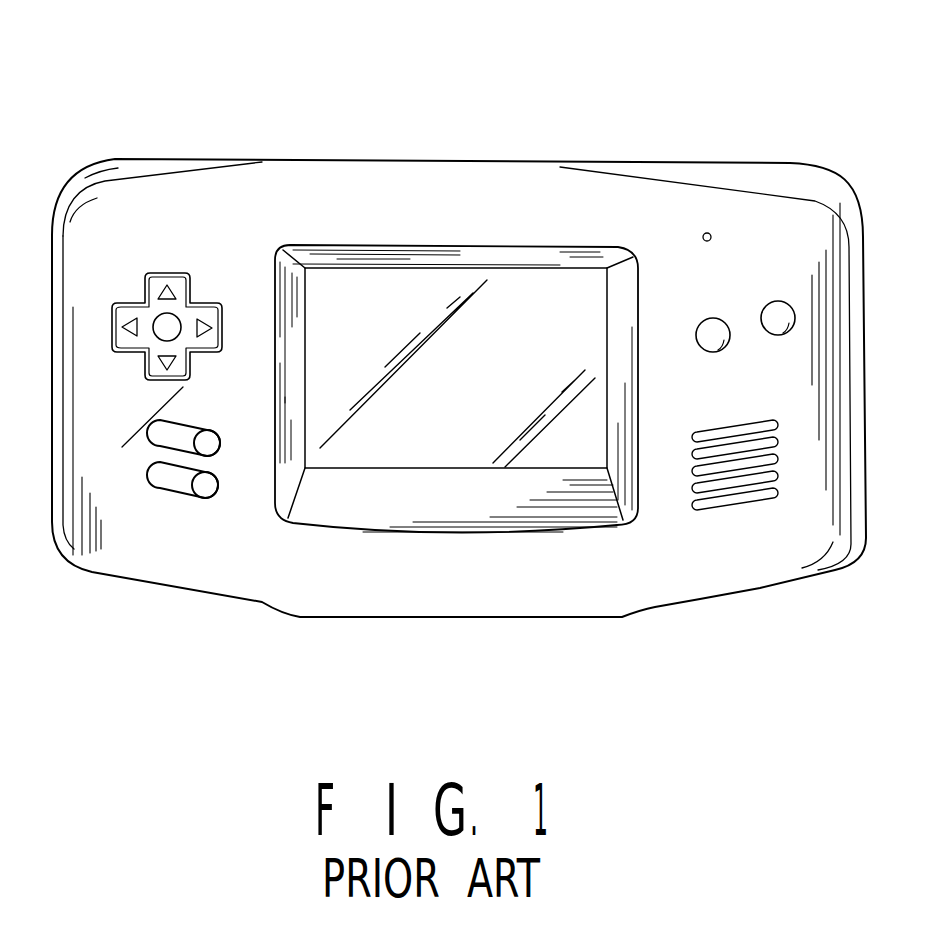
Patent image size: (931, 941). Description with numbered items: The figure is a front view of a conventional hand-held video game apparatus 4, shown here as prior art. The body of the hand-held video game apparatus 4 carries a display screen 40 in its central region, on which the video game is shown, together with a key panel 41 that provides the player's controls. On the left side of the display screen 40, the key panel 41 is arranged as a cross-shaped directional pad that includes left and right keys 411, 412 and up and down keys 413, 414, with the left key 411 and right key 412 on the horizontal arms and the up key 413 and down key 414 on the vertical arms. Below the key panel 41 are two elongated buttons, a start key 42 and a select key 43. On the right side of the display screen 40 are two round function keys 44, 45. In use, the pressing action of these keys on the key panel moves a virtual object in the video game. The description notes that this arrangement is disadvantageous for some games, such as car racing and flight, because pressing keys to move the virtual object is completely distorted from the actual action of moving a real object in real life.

The hand-held video game apparatus 4 is at (518, 148).
The display screen 40 is at (453, 440).
The key panel 41 is at (164, 269).
The left key 411 is at (127, 325).
The right key 412 is at (200, 333).
The up key 413 is at (173, 297).
The down key 414 is at (160, 357).
The start key 42 is at (207, 443).
The select key 43 is at (197, 487).
The function key 44 is at (700, 333).
The function key 45 is at (783, 313).